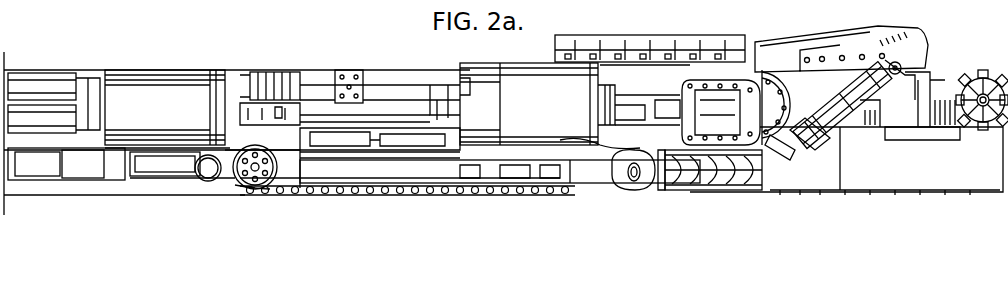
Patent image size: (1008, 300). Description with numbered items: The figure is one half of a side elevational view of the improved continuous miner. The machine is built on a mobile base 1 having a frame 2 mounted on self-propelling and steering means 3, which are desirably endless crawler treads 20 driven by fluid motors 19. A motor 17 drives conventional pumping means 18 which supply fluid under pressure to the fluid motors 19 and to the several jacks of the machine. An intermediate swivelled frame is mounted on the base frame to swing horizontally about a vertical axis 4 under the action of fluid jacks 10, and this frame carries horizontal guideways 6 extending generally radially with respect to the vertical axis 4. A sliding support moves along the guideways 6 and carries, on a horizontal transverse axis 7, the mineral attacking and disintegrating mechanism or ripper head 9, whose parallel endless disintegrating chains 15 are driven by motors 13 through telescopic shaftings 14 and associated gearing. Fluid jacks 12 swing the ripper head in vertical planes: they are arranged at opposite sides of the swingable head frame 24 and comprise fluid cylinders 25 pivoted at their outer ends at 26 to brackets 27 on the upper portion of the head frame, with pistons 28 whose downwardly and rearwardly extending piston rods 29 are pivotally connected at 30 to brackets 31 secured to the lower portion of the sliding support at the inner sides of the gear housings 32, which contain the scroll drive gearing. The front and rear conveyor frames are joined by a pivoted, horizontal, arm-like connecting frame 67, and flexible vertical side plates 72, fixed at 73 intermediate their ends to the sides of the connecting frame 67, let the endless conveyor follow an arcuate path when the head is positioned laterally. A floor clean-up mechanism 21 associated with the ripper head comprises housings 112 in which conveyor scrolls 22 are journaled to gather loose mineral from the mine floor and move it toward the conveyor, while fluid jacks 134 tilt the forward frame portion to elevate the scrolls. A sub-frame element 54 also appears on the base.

The mobile base 1 is at (414, 170).
The frame 2 is at (236, 182).
The self-propelling and steering means 3 is at (450, 196).
The vertical axis 4 is at (100, 207).
The horizontal guideways 6 is at (610, 210).
The horizontal transverse axis 7 is at (721, 112).
The ripper head 9 is at (978, 65).
The fluid jacks 10 is at (308, 150).
The fluid jacks 12 is at (862, 130).
The motors 13 is at (528, 86).
The telescopic shaftings 14 is at (650, 104).
The endless disintegrating chains 15 is at (980, 128).
The motor 17 is at (164, 90).
The pumping means 18 is at (26, 84).
The fluid motors 19 is at (271, 90).
The endless crawler treads 20 is at (358, 196).
The floor clean-up mechanism 21 is at (680, 2).
The conveyor scrolls 22 is at (712, 192).
The head frame 24 is at (897, 130).
The fluid cylinders 25 is at (870, 130).
The pivot 26 is at (898, 62).
The brackets 27 is at (920, 68).
The pistons 28 is at (860, 38).
The piston rods 29 is at (818, 148).
The pivotal connection 30 is at (801, 150).
The brackets 31 is at (776, 148).
The gear housings 32 is at (757, 74).
The sub-frame 54 is at (333, 136).
The connecting frame 67 is at (406, 90).
The flexible vertical side plates 72 is at (388, 76).
The fixing point 73 is at (346, 73).
The housings 112 is at (665, 188).
The fluid jacks 134 is at (592, 155).